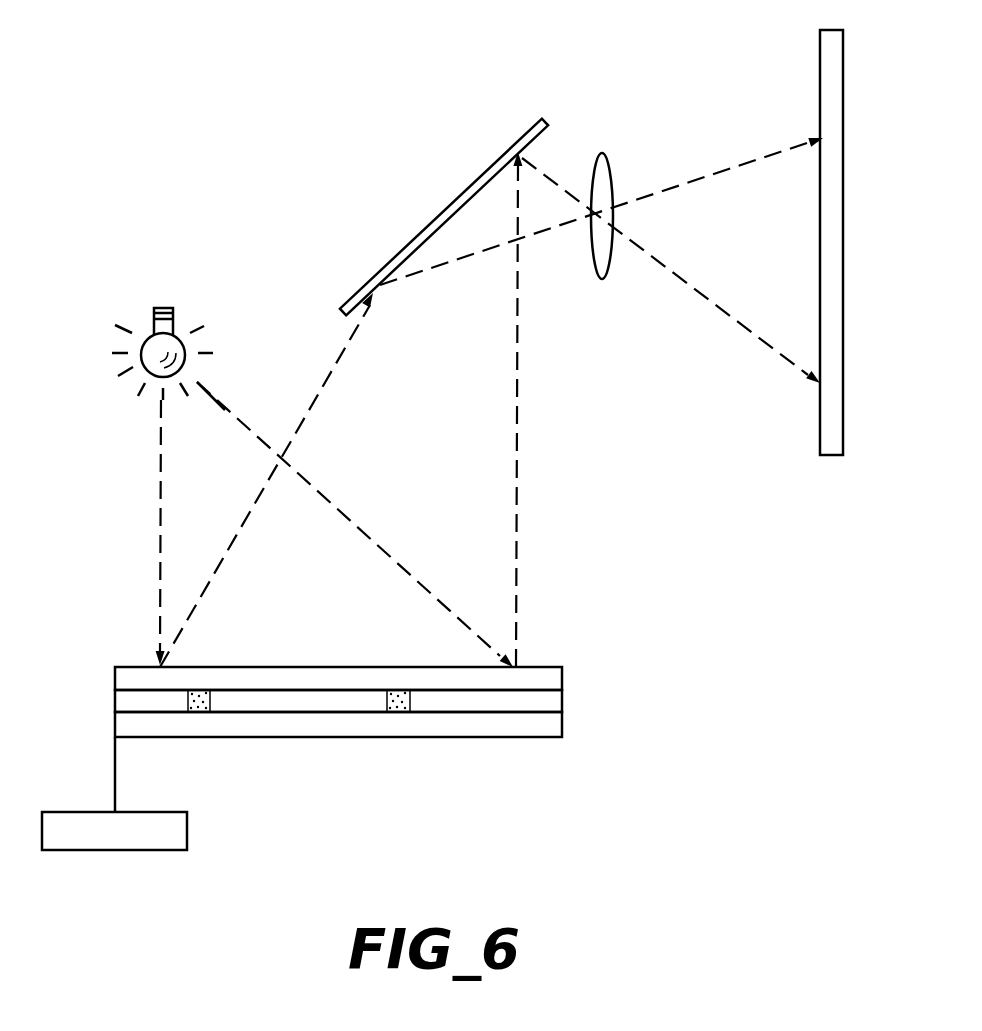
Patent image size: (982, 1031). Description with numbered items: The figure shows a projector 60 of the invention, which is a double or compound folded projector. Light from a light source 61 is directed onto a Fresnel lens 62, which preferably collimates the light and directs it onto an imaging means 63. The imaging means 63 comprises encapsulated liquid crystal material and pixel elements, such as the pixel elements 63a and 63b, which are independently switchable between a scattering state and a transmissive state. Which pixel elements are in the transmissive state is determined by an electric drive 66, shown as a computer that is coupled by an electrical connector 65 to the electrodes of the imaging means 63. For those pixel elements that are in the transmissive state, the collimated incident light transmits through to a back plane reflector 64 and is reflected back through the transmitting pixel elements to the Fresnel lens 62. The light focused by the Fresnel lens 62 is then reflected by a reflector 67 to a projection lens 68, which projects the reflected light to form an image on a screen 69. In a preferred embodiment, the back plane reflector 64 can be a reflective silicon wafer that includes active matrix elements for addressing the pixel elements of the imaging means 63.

The projector 60 is at (764, 597).
The light source 61 is at (181, 332).
The Fresnel lens 62 is at (540, 675).
The imaging means 63 is at (557, 705).
The pixel element 63a is at (212, 710).
The pixel element 63b is at (415, 712).
The back plane reflector 64 is at (548, 732).
The electrical connector 65 is at (113, 757).
The electric drive 66 is at (128, 844).
The reflector 67 is at (440, 213).
The projection lens 68 is at (601, 155).
The screen 69 is at (820, 410).